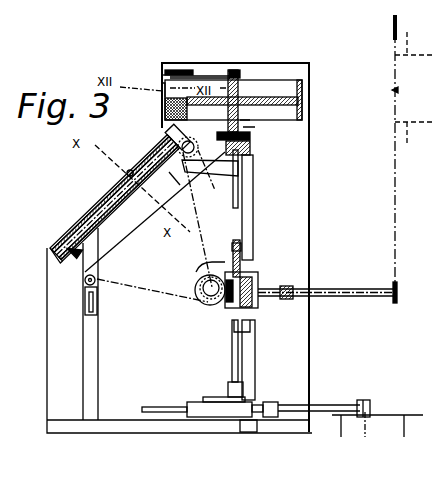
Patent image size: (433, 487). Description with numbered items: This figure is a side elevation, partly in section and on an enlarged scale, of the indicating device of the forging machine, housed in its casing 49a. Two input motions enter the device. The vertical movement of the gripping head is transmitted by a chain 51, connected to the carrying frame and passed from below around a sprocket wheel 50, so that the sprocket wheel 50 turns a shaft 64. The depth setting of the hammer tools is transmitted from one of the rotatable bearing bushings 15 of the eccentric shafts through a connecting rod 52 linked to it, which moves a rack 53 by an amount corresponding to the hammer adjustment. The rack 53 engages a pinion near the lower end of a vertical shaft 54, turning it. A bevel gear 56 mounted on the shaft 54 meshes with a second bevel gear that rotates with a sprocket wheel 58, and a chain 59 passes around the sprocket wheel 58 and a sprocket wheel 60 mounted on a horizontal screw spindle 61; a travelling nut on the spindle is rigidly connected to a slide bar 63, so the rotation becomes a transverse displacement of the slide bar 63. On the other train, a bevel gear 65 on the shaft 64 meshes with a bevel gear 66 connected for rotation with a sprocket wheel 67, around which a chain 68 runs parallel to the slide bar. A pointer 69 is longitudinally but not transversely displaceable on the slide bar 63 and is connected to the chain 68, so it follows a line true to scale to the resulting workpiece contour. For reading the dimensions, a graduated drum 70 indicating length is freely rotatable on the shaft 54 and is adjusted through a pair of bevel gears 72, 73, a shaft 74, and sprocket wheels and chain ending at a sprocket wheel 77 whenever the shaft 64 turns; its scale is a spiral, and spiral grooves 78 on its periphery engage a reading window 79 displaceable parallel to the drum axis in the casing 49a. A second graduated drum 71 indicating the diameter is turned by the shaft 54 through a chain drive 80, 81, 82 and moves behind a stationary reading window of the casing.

The bearing bushing 15 is at (390, 418).
The casing 49a is at (311, 155).
The sprocket wheel 50 is at (397, 290).
The chain 51 is at (396, 236).
The connecting rod 52 is at (335, 404).
The rack 53 is at (265, 400).
The vertical shaft 54 is at (243, 107).
The bevel gear 56 is at (255, 136).
The sprocket wheel 58 is at (250, 153).
The chain 59 is at (215, 175).
The sprocket wheel 60 is at (208, 156).
The screw spindle 61 is at (180, 187).
The slide bar 63 is at (86, 214).
The shaft 64 is at (332, 298).
The bevel gear 65 is at (212, 303).
The bevel gear 66 is at (200, 276).
The sprocket wheel 67 is at (200, 219).
The chain 68 is at (98, 226).
The pointer 69 is at (127, 173).
The graduated drum 70 is at (292, 100).
The graduated drum 71 is at (178, 70).
The bevel gear 72 is at (257, 305).
The bevel gear 73 is at (245, 272).
The shaft 74 is at (240, 245).
The sprocket wheel 77 is at (243, 127).
The spiral grooves 78 is at (166, 115).
The reading window 79 is at (163, 90).
The chain drive 80 is at (238, 71).
The chain drive 81 is at (205, 76).
The chain drive 82 is at (163, 80).